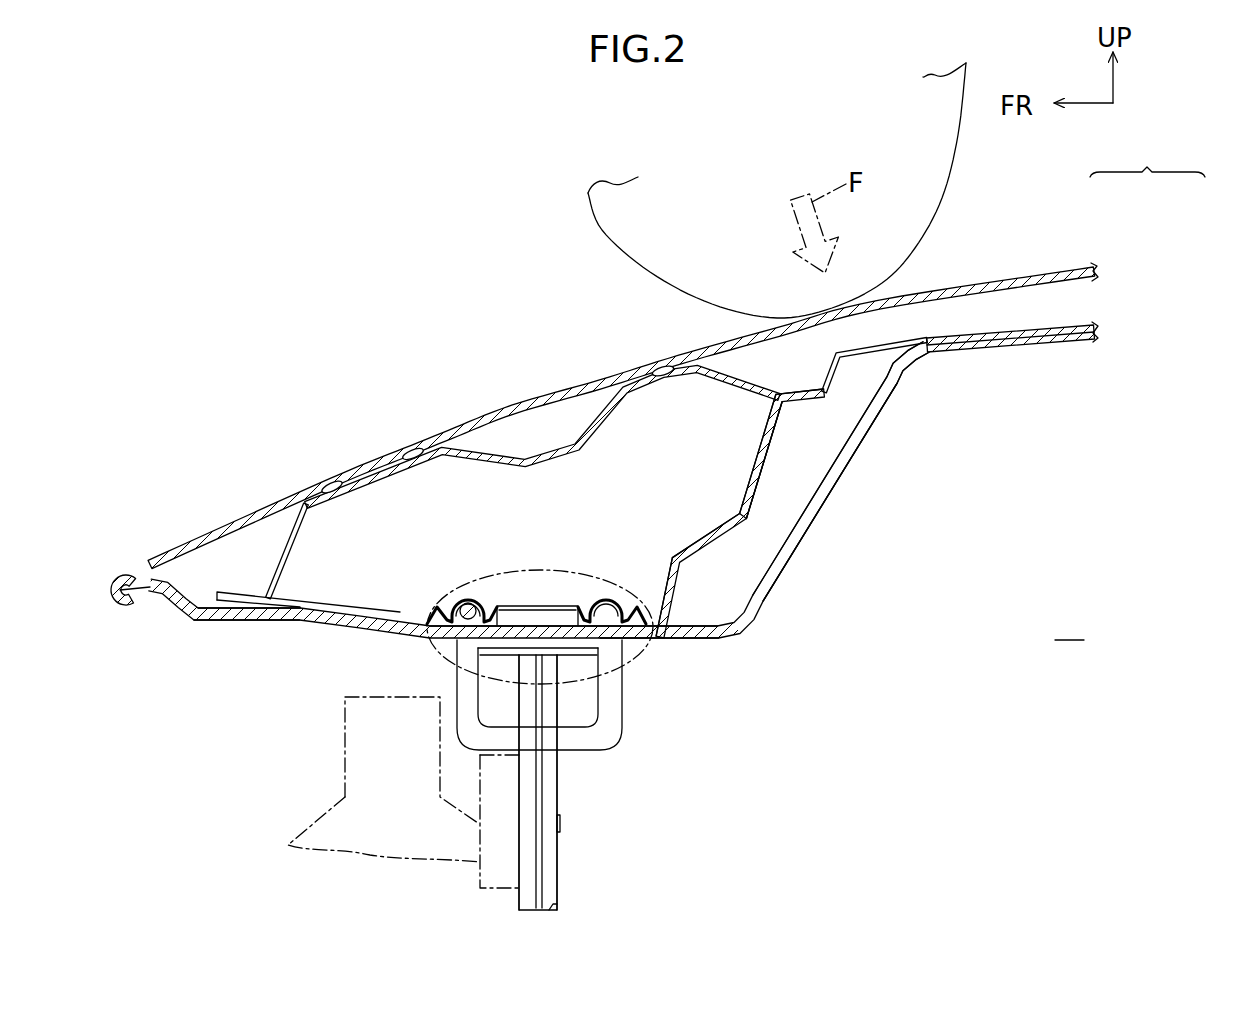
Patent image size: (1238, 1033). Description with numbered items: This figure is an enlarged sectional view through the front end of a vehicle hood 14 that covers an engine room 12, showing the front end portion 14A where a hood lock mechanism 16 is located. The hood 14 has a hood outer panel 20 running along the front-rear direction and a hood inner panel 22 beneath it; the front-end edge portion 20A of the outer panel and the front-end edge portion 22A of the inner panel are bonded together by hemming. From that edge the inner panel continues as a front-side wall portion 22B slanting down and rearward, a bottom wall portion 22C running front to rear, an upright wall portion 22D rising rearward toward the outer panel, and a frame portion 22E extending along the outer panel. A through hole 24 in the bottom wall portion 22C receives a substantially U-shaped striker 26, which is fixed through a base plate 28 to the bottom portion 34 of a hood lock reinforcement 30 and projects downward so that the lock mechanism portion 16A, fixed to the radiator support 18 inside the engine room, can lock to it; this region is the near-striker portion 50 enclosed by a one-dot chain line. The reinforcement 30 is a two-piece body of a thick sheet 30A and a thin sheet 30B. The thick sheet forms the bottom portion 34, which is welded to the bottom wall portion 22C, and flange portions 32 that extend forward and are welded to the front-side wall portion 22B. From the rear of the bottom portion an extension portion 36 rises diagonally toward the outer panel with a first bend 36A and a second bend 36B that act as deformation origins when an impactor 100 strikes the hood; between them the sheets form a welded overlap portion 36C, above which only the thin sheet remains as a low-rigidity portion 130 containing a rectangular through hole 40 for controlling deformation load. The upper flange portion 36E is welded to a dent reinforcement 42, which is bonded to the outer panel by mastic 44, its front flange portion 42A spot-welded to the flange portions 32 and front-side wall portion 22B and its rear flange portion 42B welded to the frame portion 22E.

The engine room 12 is at (1072, 626).
The hood 14 is at (1147, 156).
The front end portion of the hood 14A is at (498, 360).
The hood lock mechanism 16 is at (702, 741).
The lock mechanism portion 16A is at (557, 843).
The radiator support 18 is at (345, 773).
The hood outer panel 20 is at (1050, 267).
The front-end edge portion of the hood outer panel 20A is at (132, 604).
The hood inner panel 22 is at (1060, 353).
The front-end edge portion of the hood inner panel 22A is at (142, 578).
The front-side wall portion 22B is at (235, 622).
The bottom wall portion 22C is at (433, 642).
The upright wall portion 22D is at (802, 540).
The frame portion 22E is at (1004, 356).
The through hole 24 is at (597, 628).
The striker 26 is at (622, 714).
The base plate 28 is at (472, 600).
The hood lock reinforcement 30 is at (738, 586).
The thick sheet 30A is at (665, 650).
The thin sheet 30B is at (750, 508).
The flange portions 32 is at (262, 612).
The bottom portion 34 is at (581, 622).
The extension portion 36 is at (689, 591).
The first bend 36A is at (674, 562).
The second bend 36B is at (743, 510).
The overlap portion 36C is at (702, 530).
The flange portion 36E is at (805, 400).
The through hole 40 is at (777, 460).
The dent reinforcement 42 is at (601, 409).
The flange portion on the front end of the dent reinforcement 42A is at (243, 592).
The flange portion on the rear end of the dent reinforcement 42B is at (928, 340).
The mastic 44 is at (411, 452).
The near-striker portion 50 is at (540, 566).
The impactor 100 is at (960, 180).
The low-rigidity portion 130 is at (763, 473).